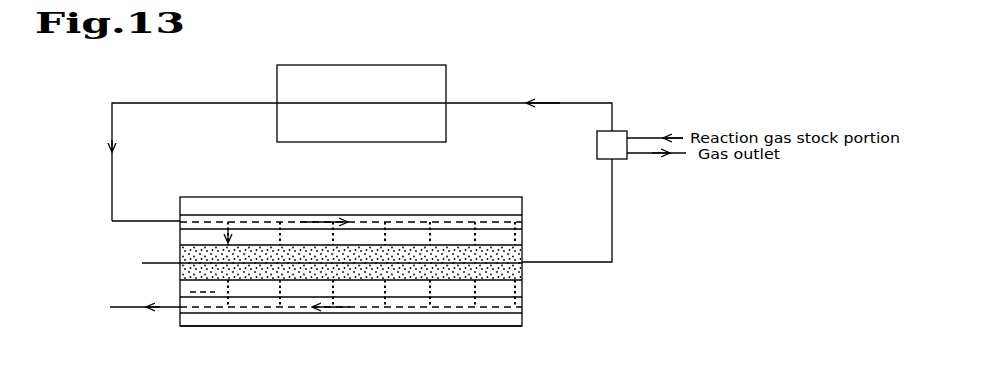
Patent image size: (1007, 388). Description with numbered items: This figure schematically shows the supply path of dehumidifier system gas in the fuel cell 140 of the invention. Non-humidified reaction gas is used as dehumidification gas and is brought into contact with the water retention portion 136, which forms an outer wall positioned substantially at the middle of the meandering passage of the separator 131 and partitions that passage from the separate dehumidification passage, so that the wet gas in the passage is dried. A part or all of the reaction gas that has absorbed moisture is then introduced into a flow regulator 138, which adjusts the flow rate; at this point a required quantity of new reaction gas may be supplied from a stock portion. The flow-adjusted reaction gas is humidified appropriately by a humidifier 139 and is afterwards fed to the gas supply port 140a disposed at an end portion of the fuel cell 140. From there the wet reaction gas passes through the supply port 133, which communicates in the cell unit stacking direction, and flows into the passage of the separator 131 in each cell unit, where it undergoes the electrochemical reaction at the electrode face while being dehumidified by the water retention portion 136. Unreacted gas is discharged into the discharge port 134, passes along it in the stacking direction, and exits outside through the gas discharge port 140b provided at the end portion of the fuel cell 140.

The separator 131 is at (188, 293).
The supply port 133 is at (180, 232).
The discharge port 134 is at (205, 316).
The water retention portion 136 is at (522, 289).
The flow regulator 138 is at (619, 131).
The humidifier 139 is at (430, 80).
The fuel cell 140 is at (262, 332).
The gas supply port 140a is at (180, 220).
The gas discharge port 140b is at (178, 312).